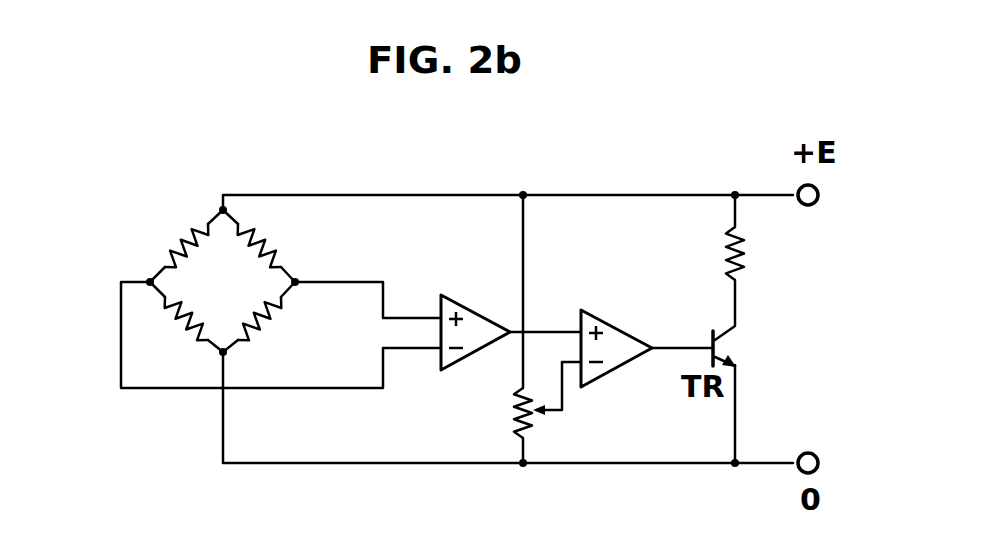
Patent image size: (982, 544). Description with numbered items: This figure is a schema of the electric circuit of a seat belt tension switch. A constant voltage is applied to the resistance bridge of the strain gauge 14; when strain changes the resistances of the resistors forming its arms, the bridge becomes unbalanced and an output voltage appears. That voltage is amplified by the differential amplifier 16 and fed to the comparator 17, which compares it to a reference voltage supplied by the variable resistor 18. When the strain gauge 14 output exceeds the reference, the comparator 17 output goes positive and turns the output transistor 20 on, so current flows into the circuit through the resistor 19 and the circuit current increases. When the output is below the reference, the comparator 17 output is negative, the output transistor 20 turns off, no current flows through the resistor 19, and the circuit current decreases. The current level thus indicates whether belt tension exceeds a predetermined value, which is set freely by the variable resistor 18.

The strain gauge 14 is at (170, 248).
The differential amplifier 16 is at (458, 305).
The comparator 17 is at (625, 332).
The variable resistor 18 is at (513, 414).
The resistor 19 is at (745, 247).
The output transistor 20 is at (727, 340).